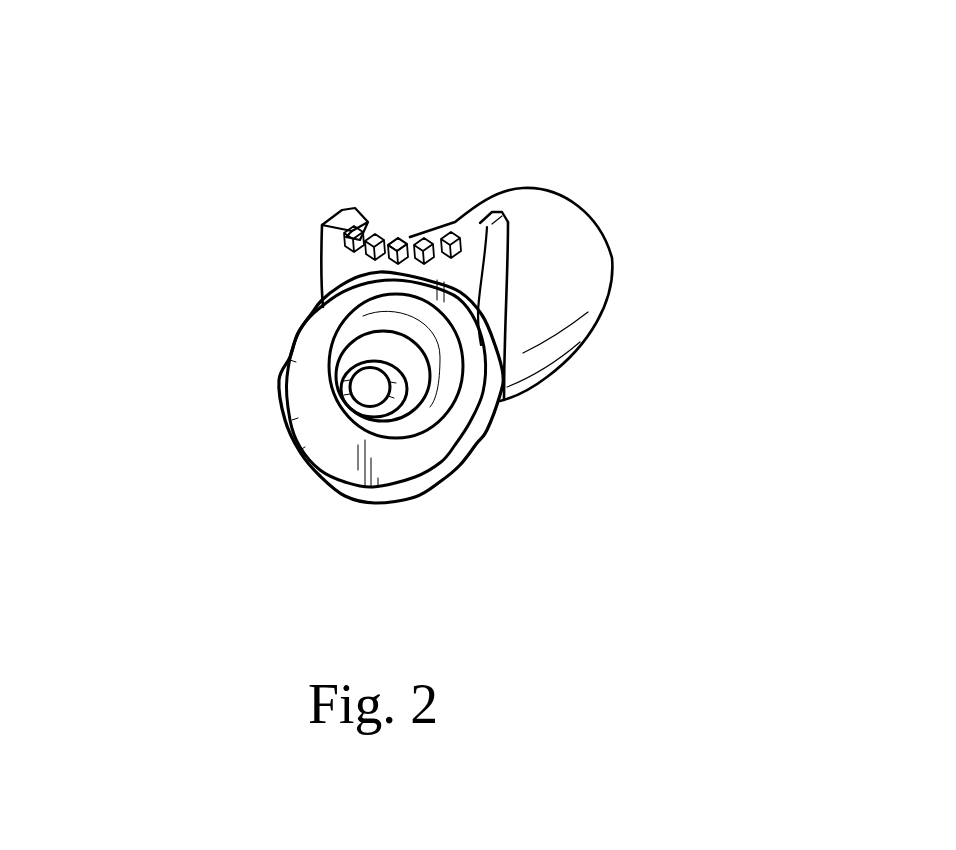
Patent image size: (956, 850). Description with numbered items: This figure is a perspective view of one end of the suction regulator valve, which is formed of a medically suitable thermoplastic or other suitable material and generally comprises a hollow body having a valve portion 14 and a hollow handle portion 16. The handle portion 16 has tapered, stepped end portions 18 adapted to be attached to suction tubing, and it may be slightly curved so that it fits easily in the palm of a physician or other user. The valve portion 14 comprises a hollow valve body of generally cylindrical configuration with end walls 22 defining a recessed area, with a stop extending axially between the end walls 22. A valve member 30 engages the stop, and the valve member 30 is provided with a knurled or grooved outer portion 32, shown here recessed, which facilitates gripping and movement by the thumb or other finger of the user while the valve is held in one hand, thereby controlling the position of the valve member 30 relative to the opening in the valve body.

The valve portion 14 is at (275, 374).
The hollow handle portion 16 is at (614, 255).
The tapered, stepped end portions 18 is at (356, 407).
The end walls 22 is at (428, 448).
The valve member 30 is at (371, 215).
The knurled or grooved outer portion 32 is at (408, 242).